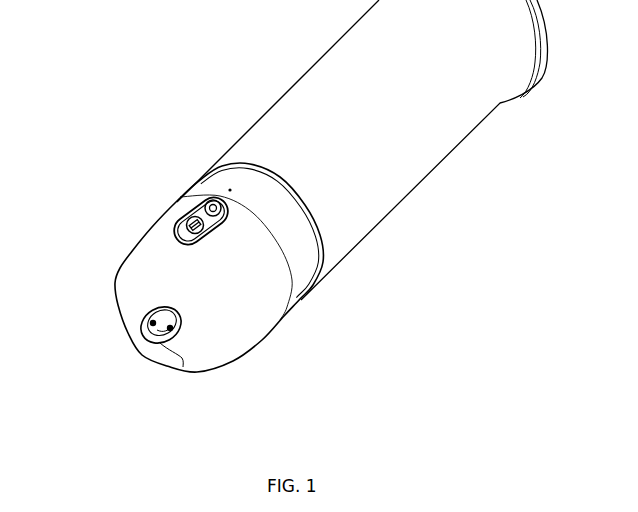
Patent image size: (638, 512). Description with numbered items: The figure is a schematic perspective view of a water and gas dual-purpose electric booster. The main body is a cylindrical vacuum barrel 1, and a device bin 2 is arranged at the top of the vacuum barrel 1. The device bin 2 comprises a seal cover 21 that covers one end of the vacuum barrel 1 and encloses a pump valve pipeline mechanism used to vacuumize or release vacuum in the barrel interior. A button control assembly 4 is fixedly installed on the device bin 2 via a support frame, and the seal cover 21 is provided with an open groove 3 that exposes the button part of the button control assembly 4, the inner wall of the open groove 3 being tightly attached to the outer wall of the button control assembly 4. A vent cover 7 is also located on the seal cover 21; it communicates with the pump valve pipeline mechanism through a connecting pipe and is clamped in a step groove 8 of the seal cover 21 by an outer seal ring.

The vacuum barrel 1 is at (292, 113).
The device bin 2 is at (150, 248).
The seal cover 21 is at (128, 283).
The open groove 3 is at (218, 229).
The button control assembly 4 is at (187, 213).
The vent cover 7 is at (140, 328).
The step groove 8 is at (177, 348).